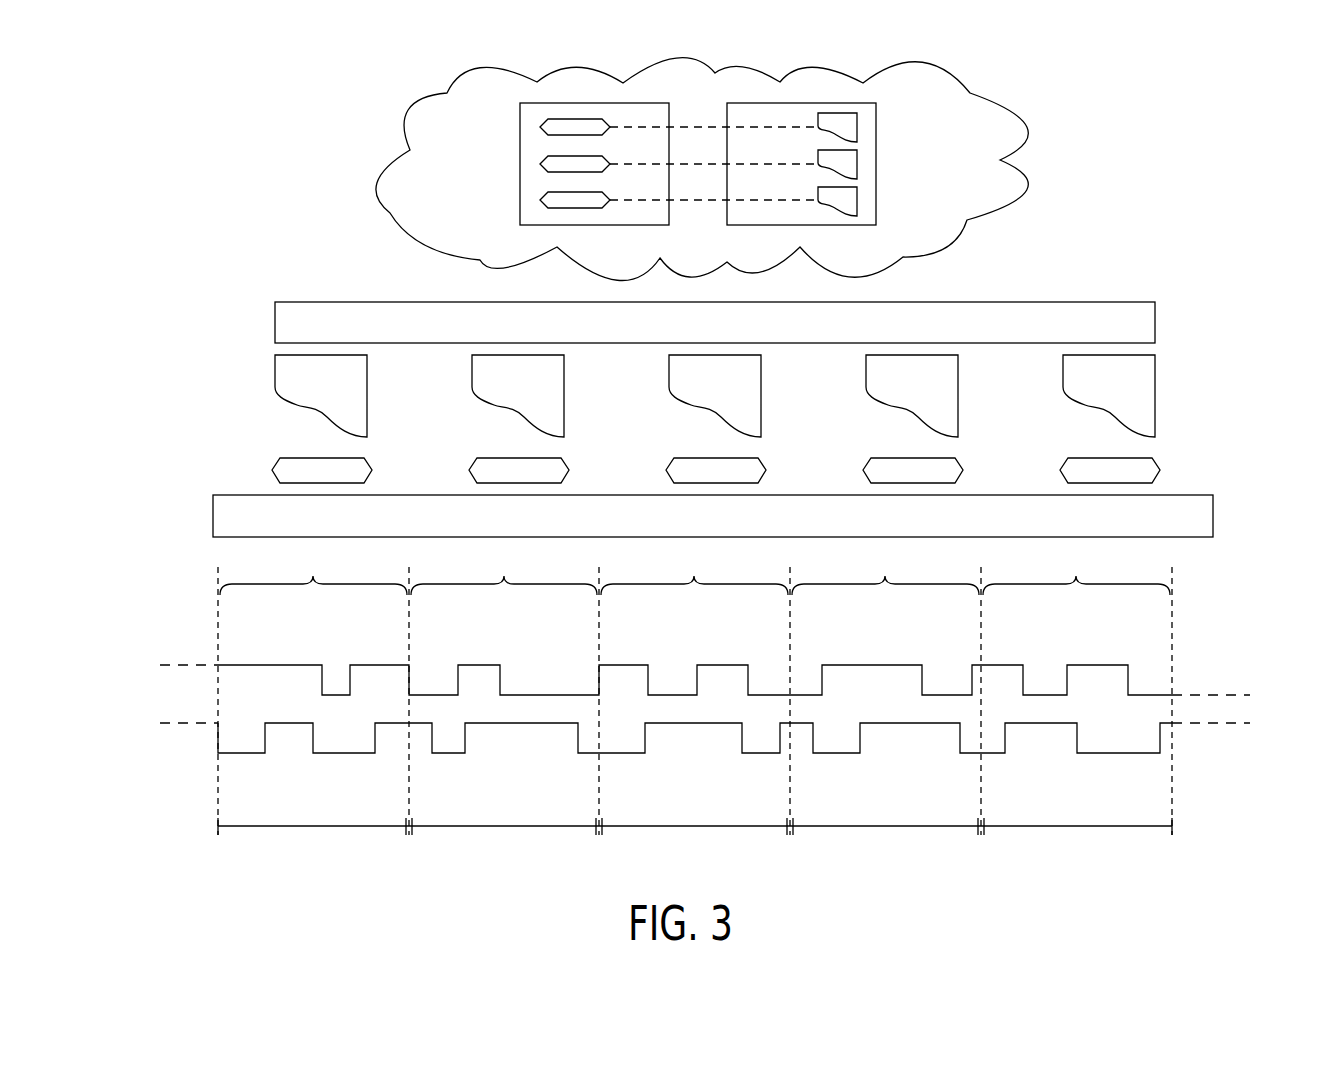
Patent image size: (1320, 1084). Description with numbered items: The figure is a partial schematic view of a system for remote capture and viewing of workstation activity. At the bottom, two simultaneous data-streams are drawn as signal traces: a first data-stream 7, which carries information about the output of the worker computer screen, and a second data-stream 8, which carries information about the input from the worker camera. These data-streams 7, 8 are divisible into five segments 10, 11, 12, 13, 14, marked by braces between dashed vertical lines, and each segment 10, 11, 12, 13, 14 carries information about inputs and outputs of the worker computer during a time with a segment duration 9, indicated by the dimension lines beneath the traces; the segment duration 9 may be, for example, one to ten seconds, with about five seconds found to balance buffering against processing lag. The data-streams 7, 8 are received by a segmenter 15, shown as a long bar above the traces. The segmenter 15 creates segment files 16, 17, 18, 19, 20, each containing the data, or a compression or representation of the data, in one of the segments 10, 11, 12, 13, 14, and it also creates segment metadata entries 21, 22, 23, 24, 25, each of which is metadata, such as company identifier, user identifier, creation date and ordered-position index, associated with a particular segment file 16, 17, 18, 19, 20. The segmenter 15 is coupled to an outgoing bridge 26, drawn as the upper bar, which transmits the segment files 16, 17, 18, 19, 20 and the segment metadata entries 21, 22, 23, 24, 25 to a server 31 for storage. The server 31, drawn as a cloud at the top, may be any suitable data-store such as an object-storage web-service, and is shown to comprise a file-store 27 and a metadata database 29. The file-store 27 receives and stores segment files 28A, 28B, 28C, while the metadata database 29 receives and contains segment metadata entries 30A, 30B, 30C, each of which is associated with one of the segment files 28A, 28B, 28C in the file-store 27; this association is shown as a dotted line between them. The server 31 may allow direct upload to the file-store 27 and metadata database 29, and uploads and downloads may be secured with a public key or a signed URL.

The first data-stream 7 is at (298, 665).
The second data-stream 8 is at (340, 753).
The segment duration 9 is at (323, 828).
The segment 10 is at (313, 567).
The segment 11 is at (504, 567).
The segment 12 is at (694, 567).
The segment 13 is at (885, 567).
The segment 14 is at (1076, 567).
The segmenter 15 is at (213, 516).
The segment file 16 is at (368, 397).
The segment file 17 is at (565, 397).
The segment file 18 is at (762, 397).
The segment file 19 is at (959, 397).
The segment file 20 is at (1156, 397).
The segment metadata entry 21 is at (372, 468).
The segment metadata entry 22 is at (569, 468).
The segment metadata entry 23 is at (766, 468).
The segment metadata entry 24 is at (963, 468).
The segment metadata entry 25 is at (1160, 468).
The outgoing bridge 26 is at (275, 323).
The file-store 27 is at (876, 208).
The segment file 28A is at (857, 128).
The segment file 28B is at (857, 165).
The segment file 28C is at (857, 201).
The metadata database 29 is at (516, 213).
The segment metadata entry 30A is at (540, 127).
The segment metadata entry 30B is at (540, 164).
The segment metadata entry 30C is at (540, 200).
The server 31 is at (1027, 130).